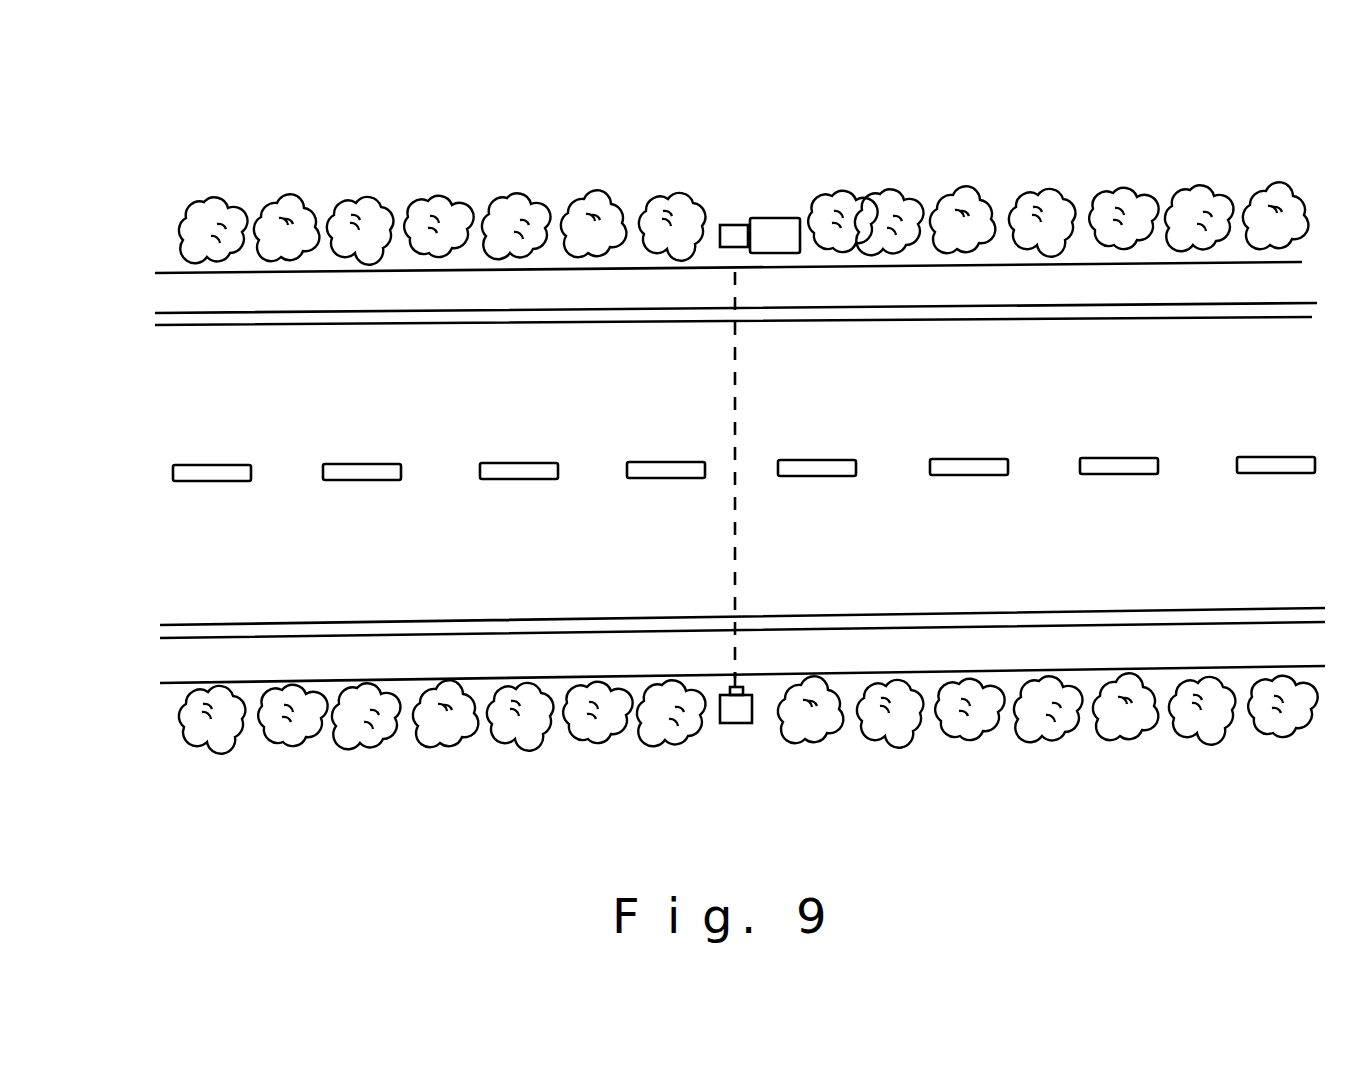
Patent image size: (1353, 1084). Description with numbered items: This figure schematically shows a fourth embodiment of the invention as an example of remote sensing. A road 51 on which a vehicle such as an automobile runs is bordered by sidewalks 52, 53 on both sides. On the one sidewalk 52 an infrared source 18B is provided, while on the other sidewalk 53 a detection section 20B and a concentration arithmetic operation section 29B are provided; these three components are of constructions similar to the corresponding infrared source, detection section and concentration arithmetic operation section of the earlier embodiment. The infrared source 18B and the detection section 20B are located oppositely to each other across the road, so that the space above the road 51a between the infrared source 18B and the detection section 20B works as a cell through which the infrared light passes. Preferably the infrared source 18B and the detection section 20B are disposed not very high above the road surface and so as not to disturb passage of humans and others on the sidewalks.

The sidewalk 53 is at (313, 285).
The road 51 is at (415, 570).
The space above the road 51a is at (742, 375).
The sidewalk 52 is at (248, 662).
The detection section 20B is at (733, 223).
The concentration arithmetic operation section 29B is at (780, 218).
The infrared source 18B is at (728, 723).